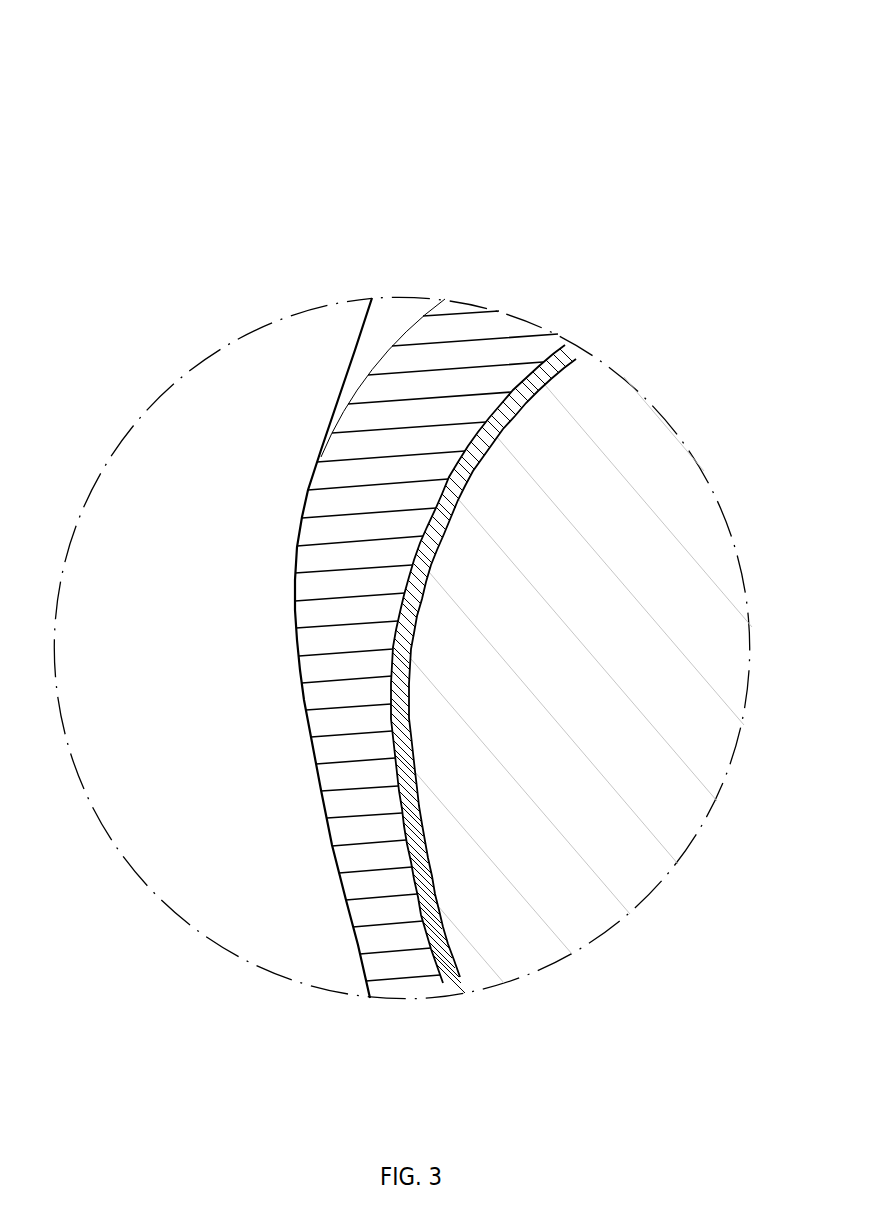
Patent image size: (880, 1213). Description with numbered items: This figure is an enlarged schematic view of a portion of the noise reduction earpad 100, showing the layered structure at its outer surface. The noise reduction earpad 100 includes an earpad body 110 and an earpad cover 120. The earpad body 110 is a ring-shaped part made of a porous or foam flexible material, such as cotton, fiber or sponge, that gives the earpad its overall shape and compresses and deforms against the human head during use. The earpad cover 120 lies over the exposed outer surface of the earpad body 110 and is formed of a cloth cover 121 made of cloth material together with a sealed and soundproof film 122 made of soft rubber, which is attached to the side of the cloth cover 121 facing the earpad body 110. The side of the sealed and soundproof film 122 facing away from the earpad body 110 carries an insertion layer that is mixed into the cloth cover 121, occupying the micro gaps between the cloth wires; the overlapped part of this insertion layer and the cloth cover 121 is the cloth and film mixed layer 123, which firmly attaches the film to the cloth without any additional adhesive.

The noise reduction earpad 100 is at (763, 78).
The earpad body 110 is at (608, 505).
The earpad cover 120 is at (463, 162).
The cloth cover 121 is at (463, 363).
The sealed and soundproof film 122 is at (582, 343).
The cloth and film mixed layer 123 is at (450, 990).